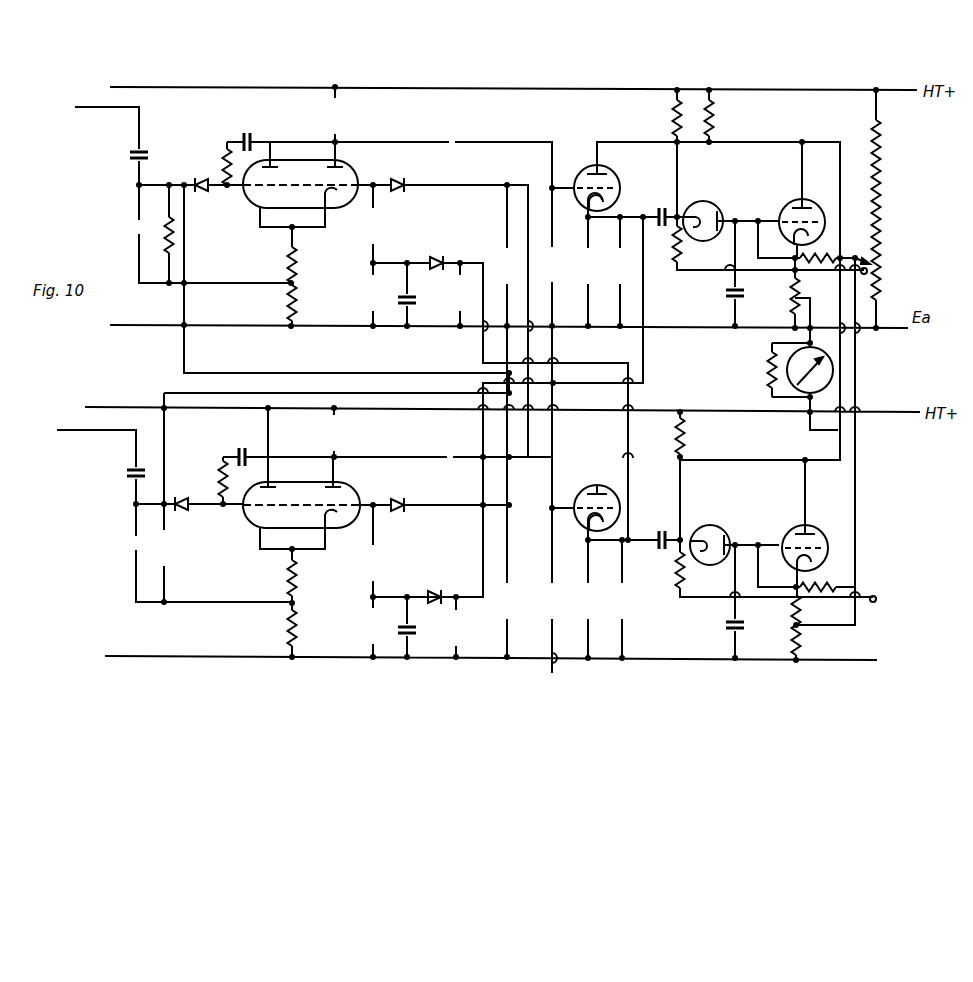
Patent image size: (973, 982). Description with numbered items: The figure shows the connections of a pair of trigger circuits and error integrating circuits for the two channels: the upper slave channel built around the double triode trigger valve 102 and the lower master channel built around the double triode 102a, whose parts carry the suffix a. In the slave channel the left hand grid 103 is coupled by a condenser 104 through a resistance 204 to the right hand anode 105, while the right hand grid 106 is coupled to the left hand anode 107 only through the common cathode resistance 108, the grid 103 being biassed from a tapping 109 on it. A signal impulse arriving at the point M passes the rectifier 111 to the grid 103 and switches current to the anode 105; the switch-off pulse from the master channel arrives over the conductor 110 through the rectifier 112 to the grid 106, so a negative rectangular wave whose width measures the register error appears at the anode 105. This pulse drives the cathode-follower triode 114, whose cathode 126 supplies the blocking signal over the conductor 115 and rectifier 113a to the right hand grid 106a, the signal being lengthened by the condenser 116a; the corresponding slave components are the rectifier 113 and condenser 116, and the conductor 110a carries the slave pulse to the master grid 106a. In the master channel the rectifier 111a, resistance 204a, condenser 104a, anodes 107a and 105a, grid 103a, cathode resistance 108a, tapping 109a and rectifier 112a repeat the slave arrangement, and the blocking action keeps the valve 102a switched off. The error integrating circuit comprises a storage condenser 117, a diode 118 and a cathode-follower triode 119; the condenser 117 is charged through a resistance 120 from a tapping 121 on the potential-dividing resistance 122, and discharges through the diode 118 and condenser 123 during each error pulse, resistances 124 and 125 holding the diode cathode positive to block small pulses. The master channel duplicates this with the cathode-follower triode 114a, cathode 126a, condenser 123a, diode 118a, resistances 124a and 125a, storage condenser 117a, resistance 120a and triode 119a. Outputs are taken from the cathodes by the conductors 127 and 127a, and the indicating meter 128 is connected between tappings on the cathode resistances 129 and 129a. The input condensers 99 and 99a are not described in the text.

The capacitor 99 is at (131, 153).
The point M is at (171, 180).
The rectifier 111 is at (203, 180).
The resistance 204 is at (224, 150).
The condenser 104 is at (247, 134).
The left hand anode 107 is at (271, 165).
The right hand anode 105 is at (337, 165).
The double triode trigger valve 102 is at (360, 170).
The left hand grid 103 is at (262, 198).
The right hand grid 106 is at (337, 205).
The conductor 110a is at (190, 258).
The tapping 109 is at (289, 285).
The common cathode resistance 108 is at (298, 290).
The rectifier 112 is at (405, 180).
The conductor 110 is at (455, 185).
The rectifier 113 is at (438, 256).
The condenser 116 is at (413, 302).
The cathode-follower triode 114 is at (620, 180).
The cathode 126 is at (605, 210).
The condenser 123 is at (668, 212).
The diode 118 is at (722, 215).
The resistance 125 is at (682, 250).
The resistance 124 is at (672, 115).
The storage condenser 117 is at (730, 300).
The conductor 115 is at (644, 312).
The cathode-follower triode 119 is at (808, 203).
The resistance 120 is at (814, 264).
The tapping 121 is at (867, 258).
The potential-dividing resistance 122 is at (880, 214).
The conductor 127 is at (878, 278).
The cathode resistance 129 is at (790, 310).
The indicating meter 128 is at (834, 353).
The capacitor 99a is at (128, 470).
The rectifier 111a is at (197, 485).
The resistance 204a is at (221, 498).
The condenser 104a is at (242, 450).
The left hand anode 107a is at (270, 480).
The right hand anode 105a is at (338, 482).
The double triode 102a is at (362, 497).
The rectifier 112a is at (395, 513).
The left hand grid 103a is at (262, 520).
The right hand grid 106a is at (335, 527).
The common cathode resistance 108a is at (300, 628).
The tapping 109a is at (290, 620).
The rectifier 113a is at (435, 592).
The condenser 116a is at (412, 634).
The cathode 126a is at (578, 497).
The cathode-follower triode 114a is at (620, 490).
The condenser 123a is at (658, 535).
The diode 118a is at (725, 533).
The resistance 125a is at (676, 572).
The resistance 124a is at (686, 436).
The storage condenser 117a is at (728, 630).
The cathode-follower triode 119a is at (823, 523).
The resistance 120a is at (828, 586).
The conductor 127a is at (866, 603).
The cathode resistance 129a is at (792, 645).